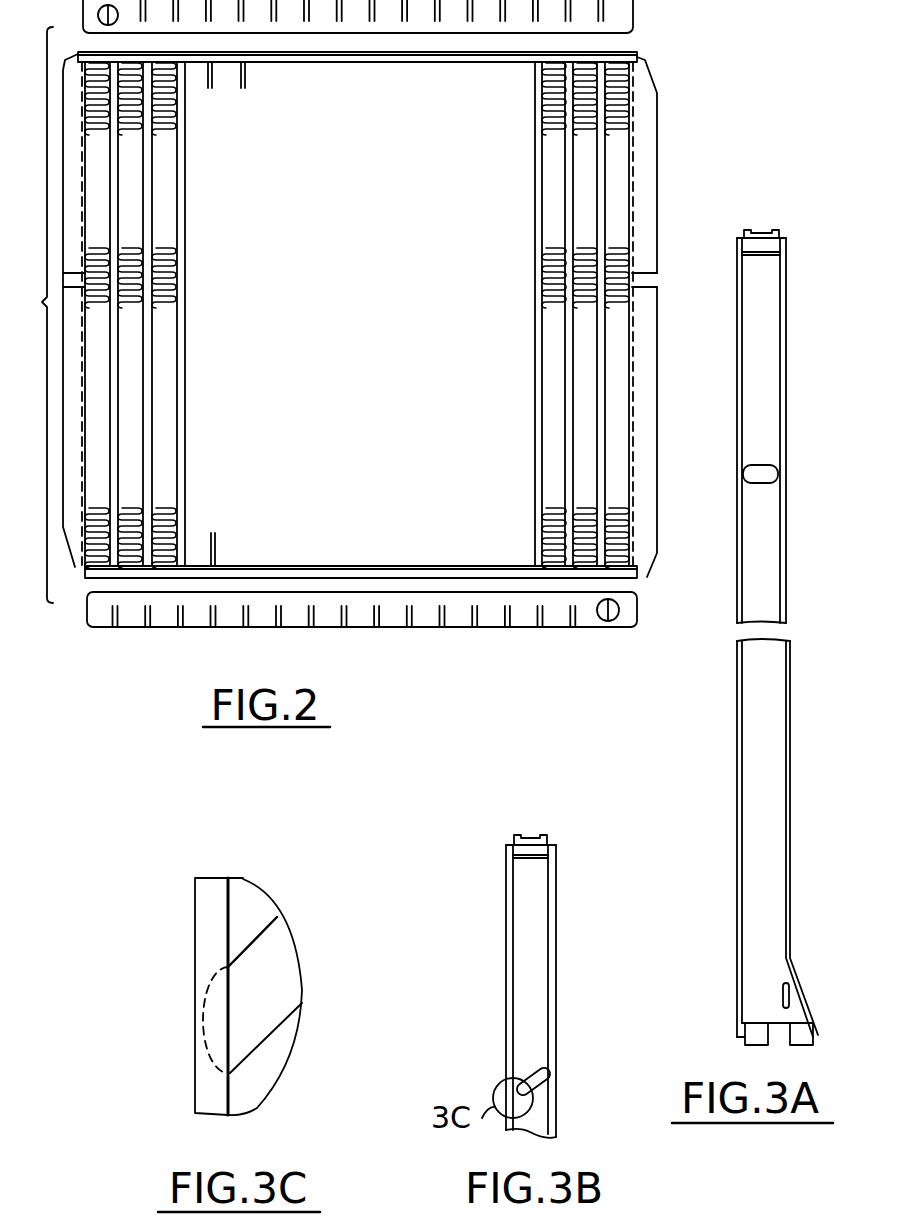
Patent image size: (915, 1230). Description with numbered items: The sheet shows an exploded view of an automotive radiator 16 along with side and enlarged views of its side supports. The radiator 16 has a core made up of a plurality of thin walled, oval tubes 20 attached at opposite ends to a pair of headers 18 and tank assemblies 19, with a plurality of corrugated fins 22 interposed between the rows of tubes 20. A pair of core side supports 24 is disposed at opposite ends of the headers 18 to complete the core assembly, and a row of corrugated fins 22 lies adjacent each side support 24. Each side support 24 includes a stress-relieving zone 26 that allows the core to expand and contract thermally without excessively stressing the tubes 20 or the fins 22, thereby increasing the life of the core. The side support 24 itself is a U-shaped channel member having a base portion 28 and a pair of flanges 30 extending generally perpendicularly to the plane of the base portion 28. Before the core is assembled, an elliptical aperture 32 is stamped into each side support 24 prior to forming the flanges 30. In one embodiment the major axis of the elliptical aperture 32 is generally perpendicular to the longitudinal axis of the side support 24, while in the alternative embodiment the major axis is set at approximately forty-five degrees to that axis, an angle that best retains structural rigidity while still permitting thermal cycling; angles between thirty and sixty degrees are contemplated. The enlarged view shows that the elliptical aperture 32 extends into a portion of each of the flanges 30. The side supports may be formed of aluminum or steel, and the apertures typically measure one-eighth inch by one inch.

In FIG. 2, the radiator 16 is at (29, 315).
In FIG. 2, the header 18 is at (618, 53).
In FIG. 2, the tank assembly 19 is at (520, 15).
In FIG. 2, the oval tube 20 is at (117, 473).
In FIG. 2, the corrugated fin 22 is at (163, 115).
In FIG. 2, the core side support 24 is at (73, 200).
In FIG. 3A, the core side support 24 is at (755, 637).
In FIG. 3B, the core side support 24 is at (536, 986).
In FIG. 2, the stress-relieving zone 26 is at (77, 270).
In FIG. 3A, the base portion 28 is at (752, 398).
In FIG. 3B, the base portion 28 is at (538, 985).
In FIG. 3C, the base portion 28 is at (252, 903).
In FIG. 3A, the flange 30 is at (786, 378).
In FIG. 3B, the flange 30 is at (507, 995).
In FIG. 3C, the flange 30 is at (195, 905).
In FIG. 3A, the elliptical aperture 32 is at (757, 487).
In FIG. 3B, the elliptical aperture 32 is at (548, 1072).
In FIG. 3C, the elliptical aperture 32 is at (272, 977).